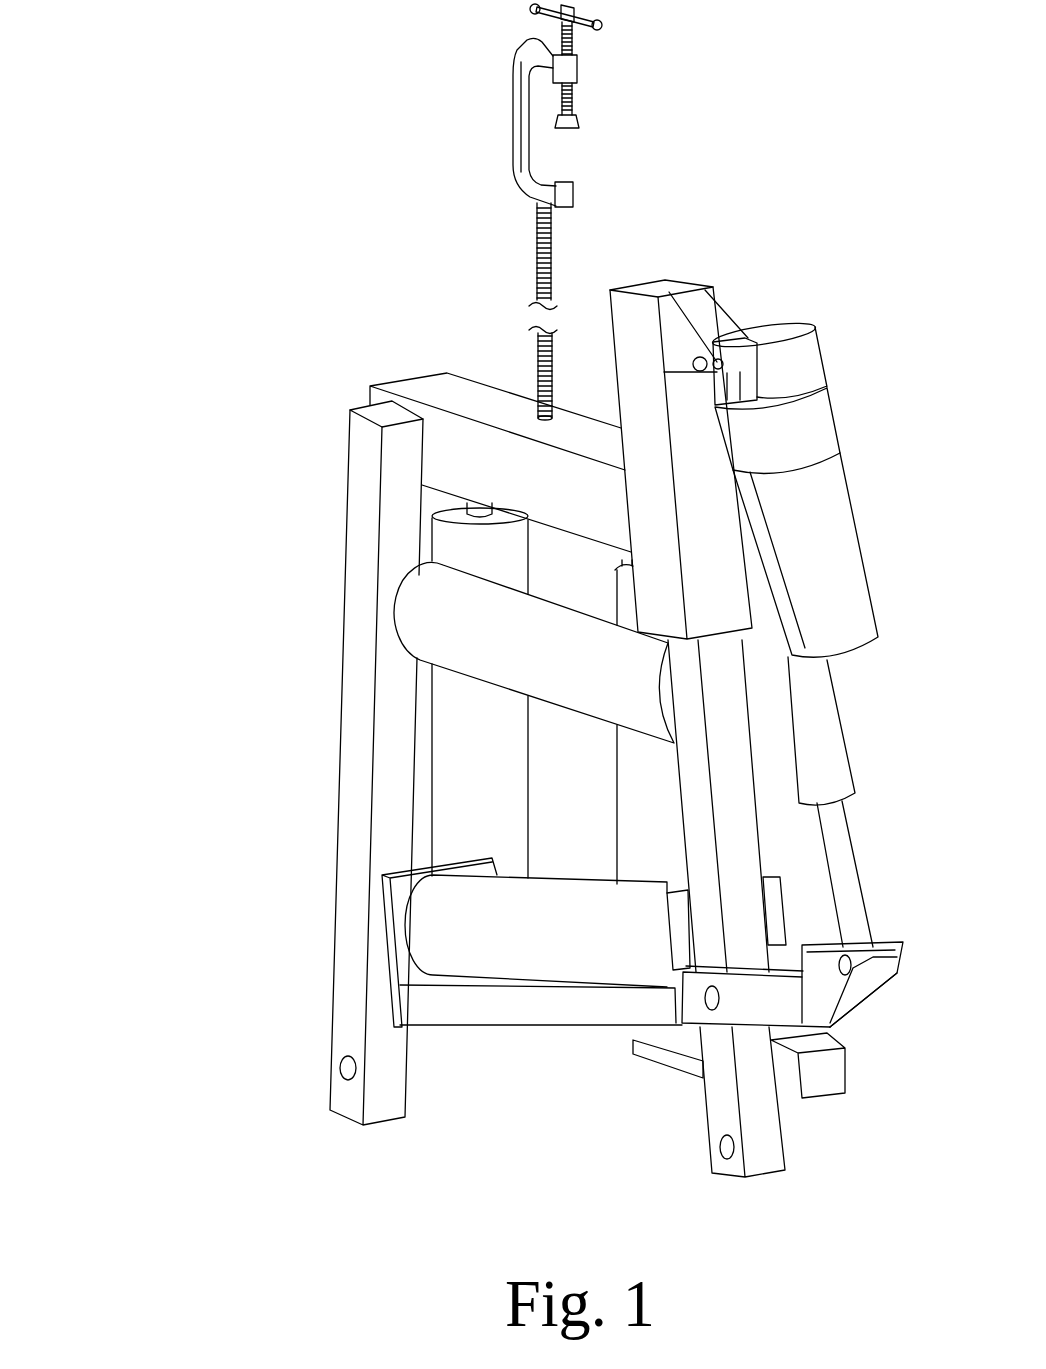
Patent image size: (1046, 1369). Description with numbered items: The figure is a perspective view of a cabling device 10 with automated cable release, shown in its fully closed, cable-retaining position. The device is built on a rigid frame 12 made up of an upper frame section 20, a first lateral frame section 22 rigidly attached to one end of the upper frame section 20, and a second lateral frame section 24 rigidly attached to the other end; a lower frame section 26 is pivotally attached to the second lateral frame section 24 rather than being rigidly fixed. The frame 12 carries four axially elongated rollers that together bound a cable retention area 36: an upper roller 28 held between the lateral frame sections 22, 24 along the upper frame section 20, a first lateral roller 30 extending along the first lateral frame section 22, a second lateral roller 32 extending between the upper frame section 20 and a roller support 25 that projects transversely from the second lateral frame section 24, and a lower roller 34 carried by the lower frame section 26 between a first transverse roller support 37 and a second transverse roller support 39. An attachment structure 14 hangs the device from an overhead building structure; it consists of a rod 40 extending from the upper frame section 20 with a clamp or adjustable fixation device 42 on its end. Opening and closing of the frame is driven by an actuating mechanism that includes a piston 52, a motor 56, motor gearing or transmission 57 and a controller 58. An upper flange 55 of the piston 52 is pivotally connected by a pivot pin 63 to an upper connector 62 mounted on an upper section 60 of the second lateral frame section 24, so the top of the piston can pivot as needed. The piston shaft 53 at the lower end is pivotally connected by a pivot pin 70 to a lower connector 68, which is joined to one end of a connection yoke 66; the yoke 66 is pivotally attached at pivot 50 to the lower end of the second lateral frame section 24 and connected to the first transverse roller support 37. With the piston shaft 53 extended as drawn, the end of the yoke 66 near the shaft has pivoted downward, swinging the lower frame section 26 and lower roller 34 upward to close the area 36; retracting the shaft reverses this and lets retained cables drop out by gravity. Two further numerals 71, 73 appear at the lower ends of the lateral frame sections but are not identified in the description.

The cabling device 10 is at (176, 96).
The frame 12 is at (318, 410).
The attachment structure 14 is at (422, 247).
The upper frame section 20 is at (489, 480).
The first lateral frame section 22 is at (345, 696).
The second lateral frame section 24 is at (695, 856).
The roller support 25 is at (828, 1082).
The lower frame section 26 is at (517, 1010).
The upper roller 28 is at (549, 675).
The first lateral roller 30 is at (465, 785).
The second lateral roller 32 is at (634, 810).
The lower roller 34 is at (532, 950).
The cable retention area 36 is at (466, 826).
The first transverse roller support 37 is at (772, 880).
The second transverse roller support 39 is at (394, 889).
The rod 40 is at (538, 258).
The clamp 42 is at (514, 126).
The pivot 50 is at (717, 990).
The piston 52 is at (828, 729).
The piston shaft 53 is at (845, 862).
The upper flange 55 is at (733, 393).
The motor 56 is at (832, 502).
The motor gearing 57 is at (820, 421).
The controller 58 is at (803, 356).
The upper section 60 is at (692, 568).
The upper connector 62 is at (672, 326).
The pivot pin 63 is at (737, 344).
The connection yoke 66 is at (705, 1018).
The lower connector 68 is at (866, 1004).
The pivot pin 70 is at (882, 951).
The lower mounting hole 71 is at (731, 1152).
The lower mounting hole 73 is at (340, 1070).